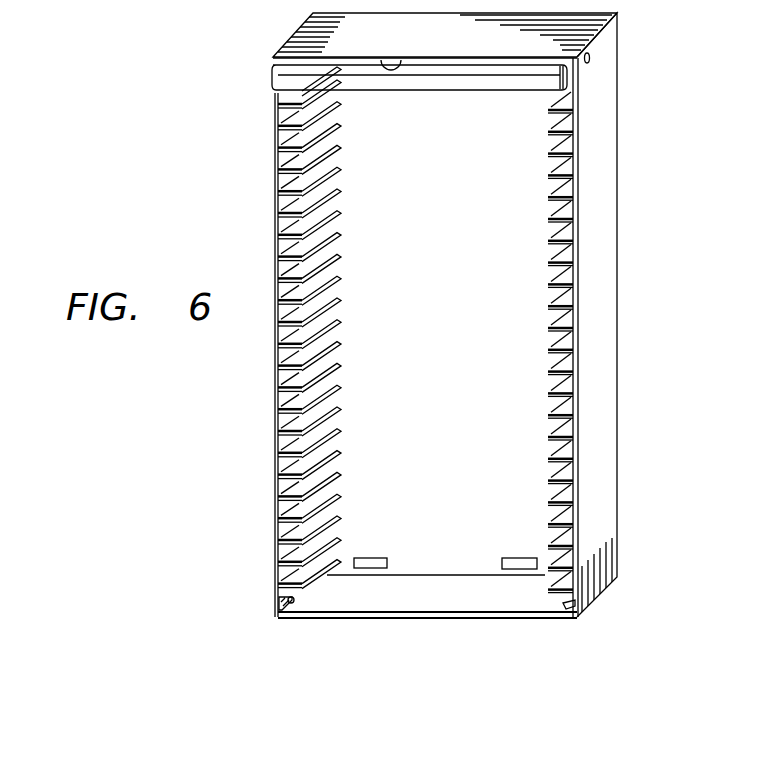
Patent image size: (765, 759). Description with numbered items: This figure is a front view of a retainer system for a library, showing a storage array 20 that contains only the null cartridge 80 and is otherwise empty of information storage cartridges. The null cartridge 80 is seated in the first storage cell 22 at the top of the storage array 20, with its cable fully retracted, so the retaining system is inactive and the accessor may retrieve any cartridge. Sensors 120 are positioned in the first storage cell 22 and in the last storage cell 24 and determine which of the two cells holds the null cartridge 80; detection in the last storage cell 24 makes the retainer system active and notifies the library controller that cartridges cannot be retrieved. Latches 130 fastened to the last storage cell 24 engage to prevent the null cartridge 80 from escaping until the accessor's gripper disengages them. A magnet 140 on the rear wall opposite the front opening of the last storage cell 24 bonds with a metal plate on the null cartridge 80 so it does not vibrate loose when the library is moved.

The storage array 20 is at (607, 152).
The first storage cell 22 is at (398, 60).
The last storage cell 24 is at (437, 603).
The null cartridge 80 is at (278, 81).
The sensors 120 is at (592, 58).
The latches 130 is at (284, 618).
The magnet 140 is at (372, 557).